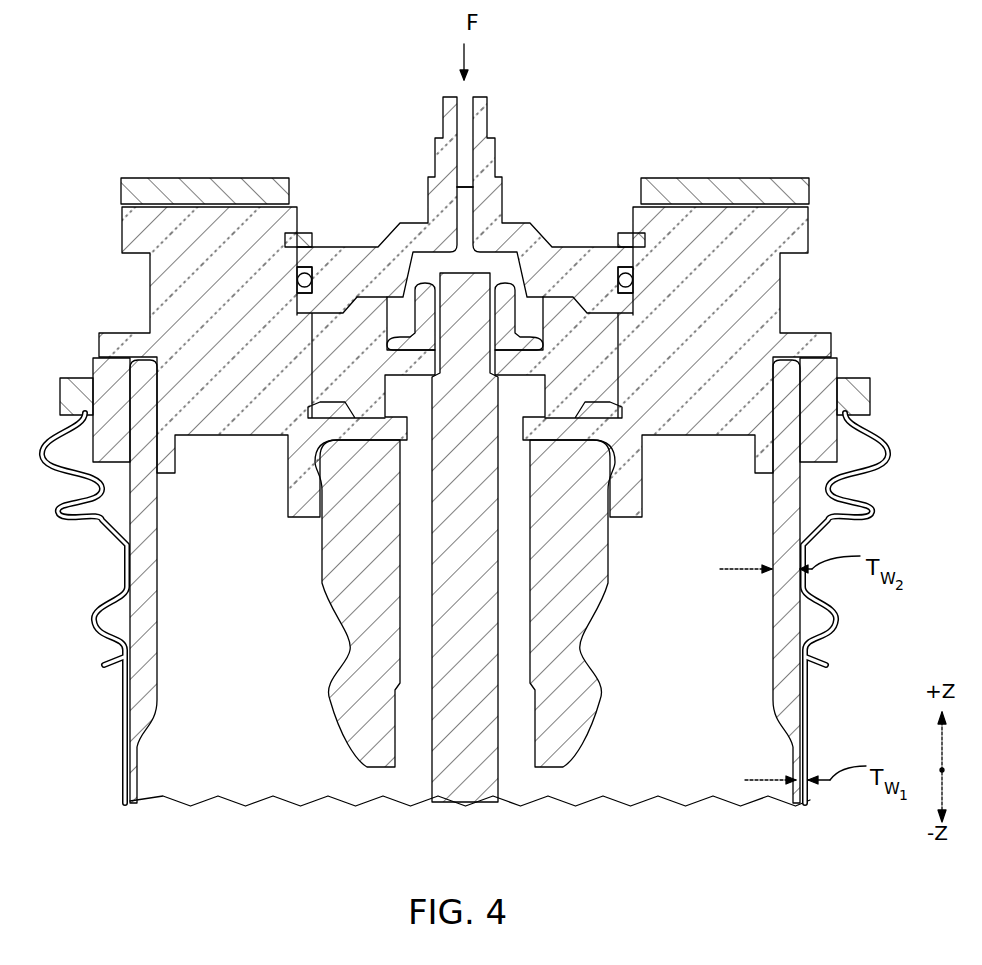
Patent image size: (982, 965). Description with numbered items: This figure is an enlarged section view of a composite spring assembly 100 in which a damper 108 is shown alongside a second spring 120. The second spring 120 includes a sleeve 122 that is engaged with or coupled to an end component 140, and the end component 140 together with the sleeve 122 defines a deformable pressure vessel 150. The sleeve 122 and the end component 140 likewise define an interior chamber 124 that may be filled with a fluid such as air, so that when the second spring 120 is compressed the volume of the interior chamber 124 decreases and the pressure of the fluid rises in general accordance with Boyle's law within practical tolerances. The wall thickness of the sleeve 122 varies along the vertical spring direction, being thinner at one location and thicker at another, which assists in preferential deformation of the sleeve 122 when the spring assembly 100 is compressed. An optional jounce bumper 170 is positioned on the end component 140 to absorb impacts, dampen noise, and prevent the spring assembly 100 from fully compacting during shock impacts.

The spring assembly 100 is at (78, 98).
The second spring 120 is at (80, 296).
The end component 140 is at (718, 232).
The deformable pressure vessel 150 is at (840, 252).
The sleeve 122 is at (790, 398).
The interior chamber 124 is at (246, 662).
The jounce bumper 170 is at (380, 748).
The damper 108 is at (472, 786).